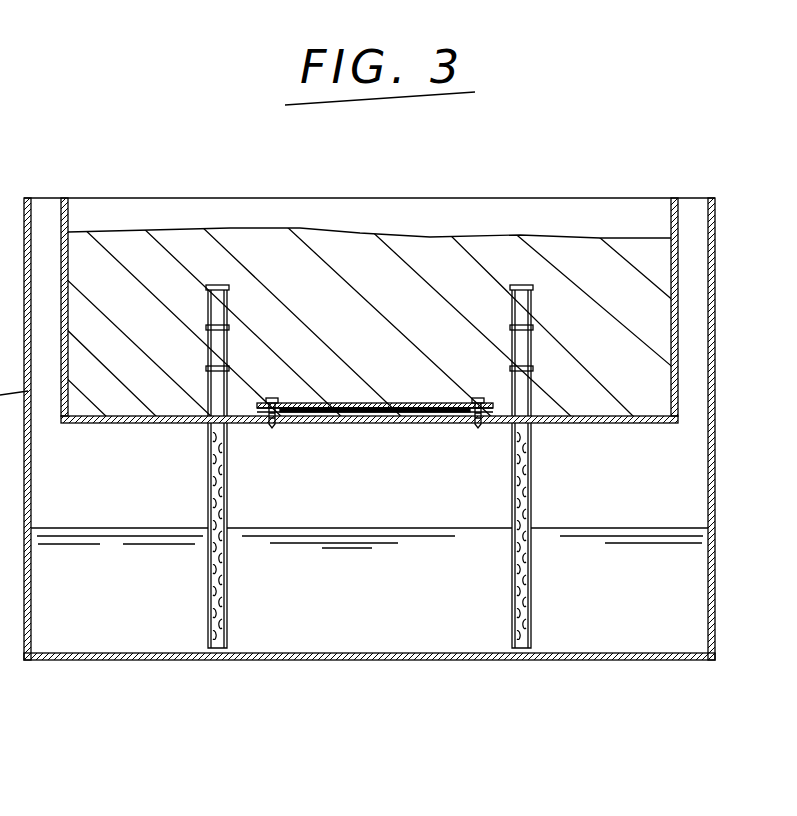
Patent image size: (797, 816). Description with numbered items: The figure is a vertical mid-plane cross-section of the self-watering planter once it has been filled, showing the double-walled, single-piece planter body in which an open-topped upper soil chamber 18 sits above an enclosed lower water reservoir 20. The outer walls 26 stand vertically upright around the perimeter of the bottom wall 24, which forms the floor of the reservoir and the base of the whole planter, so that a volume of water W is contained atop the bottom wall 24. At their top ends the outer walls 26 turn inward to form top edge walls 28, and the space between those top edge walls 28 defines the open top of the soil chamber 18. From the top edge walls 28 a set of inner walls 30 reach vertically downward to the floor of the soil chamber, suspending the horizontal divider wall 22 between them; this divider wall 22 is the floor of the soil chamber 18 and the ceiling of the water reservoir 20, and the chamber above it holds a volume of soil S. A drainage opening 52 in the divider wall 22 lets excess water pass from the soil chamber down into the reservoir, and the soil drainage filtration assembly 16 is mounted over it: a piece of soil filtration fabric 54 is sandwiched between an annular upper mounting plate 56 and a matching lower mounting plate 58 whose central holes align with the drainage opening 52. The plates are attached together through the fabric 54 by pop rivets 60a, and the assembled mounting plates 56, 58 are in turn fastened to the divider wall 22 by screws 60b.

The soil drainage filtration assembly 16 is at (441, 392).
The upper soil chamber 18 is at (579, 208).
The lower water reservoir 20 is at (700, 487).
The horizontal divider wall 22 is at (598, 424).
The bottom wall 24 is at (608, 662).
The outer walls 26 is at (713, 386).
The top edge walls 28 is at (43, 198).
The inner walls 30 is at (68, 218).
The drainage opening 52 is at (347, 418).
The soil filtration fabric 54 is at (383, 413).
The upper mounting plate 56 is at (303, 400).
The lower mounting plate 58 is at (322, 417).
The pop rivets 60a is at (418, 400).
The screws 60b is at (268, 415).
The soil S is at (163, 235).
The water W is at (692, 586).